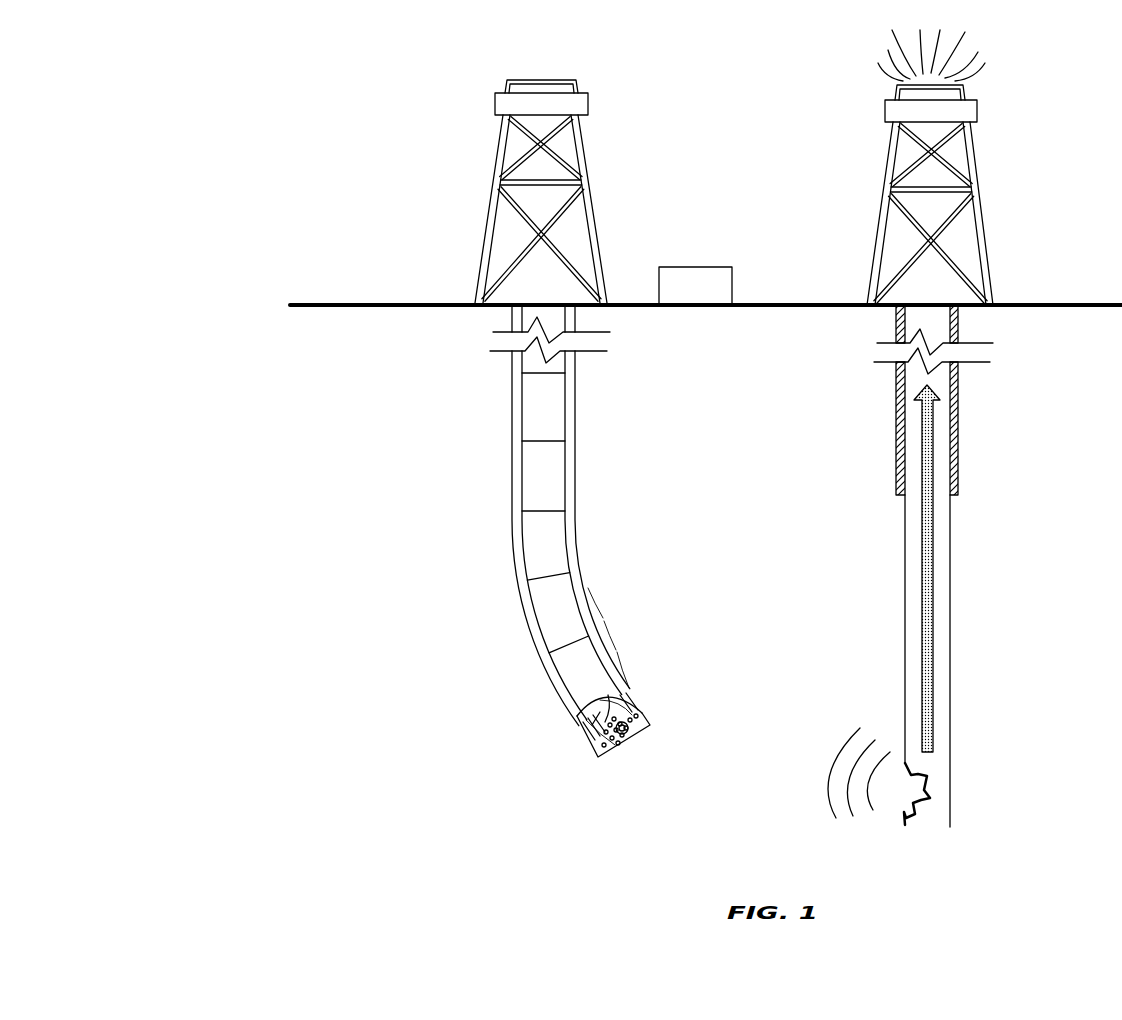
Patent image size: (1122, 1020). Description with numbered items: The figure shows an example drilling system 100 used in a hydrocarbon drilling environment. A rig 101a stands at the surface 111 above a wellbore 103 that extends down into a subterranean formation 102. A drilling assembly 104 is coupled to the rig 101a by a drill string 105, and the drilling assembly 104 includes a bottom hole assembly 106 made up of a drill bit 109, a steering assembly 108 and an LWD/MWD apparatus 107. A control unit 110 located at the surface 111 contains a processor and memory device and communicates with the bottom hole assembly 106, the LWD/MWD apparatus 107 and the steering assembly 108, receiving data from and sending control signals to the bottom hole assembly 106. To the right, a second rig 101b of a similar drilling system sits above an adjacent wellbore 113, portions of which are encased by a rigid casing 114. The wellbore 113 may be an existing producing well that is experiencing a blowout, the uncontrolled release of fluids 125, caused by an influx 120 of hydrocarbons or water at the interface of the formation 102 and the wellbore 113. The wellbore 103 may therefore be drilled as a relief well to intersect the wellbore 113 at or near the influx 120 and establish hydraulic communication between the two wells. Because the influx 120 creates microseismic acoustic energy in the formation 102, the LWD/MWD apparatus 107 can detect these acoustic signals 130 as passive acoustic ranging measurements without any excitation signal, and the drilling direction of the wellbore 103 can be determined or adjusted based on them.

The drilling system 100 is at (337, 102).
The rig 101a is at (589, 103).
The rig 101b is at (978, 106).
The subterranean formation 102 is at (781, 446).
The wellbore 103 is at (511, 408).
The drilling assembly 104 is at (511, 472).
The drill string 105 is at (567, 458).
The bottom hole assembly 106 is at (570, 739).
The LWD/MWD apparatus 107 is at (586, 604).
The steering assembly 108 is at (606, 670).
The drill bit 109 is at (636, 722).
The control unit 110 is at (711, 296).
The surface 111 is at (766, 304).
The wellbore 113 is at (953, 522).
The casing 114 is at (964, 442).
The influx 120 is at (932, 792).
The fluids 125 is at (935, 598).
The acoustic signals 130 is at (821, 806).